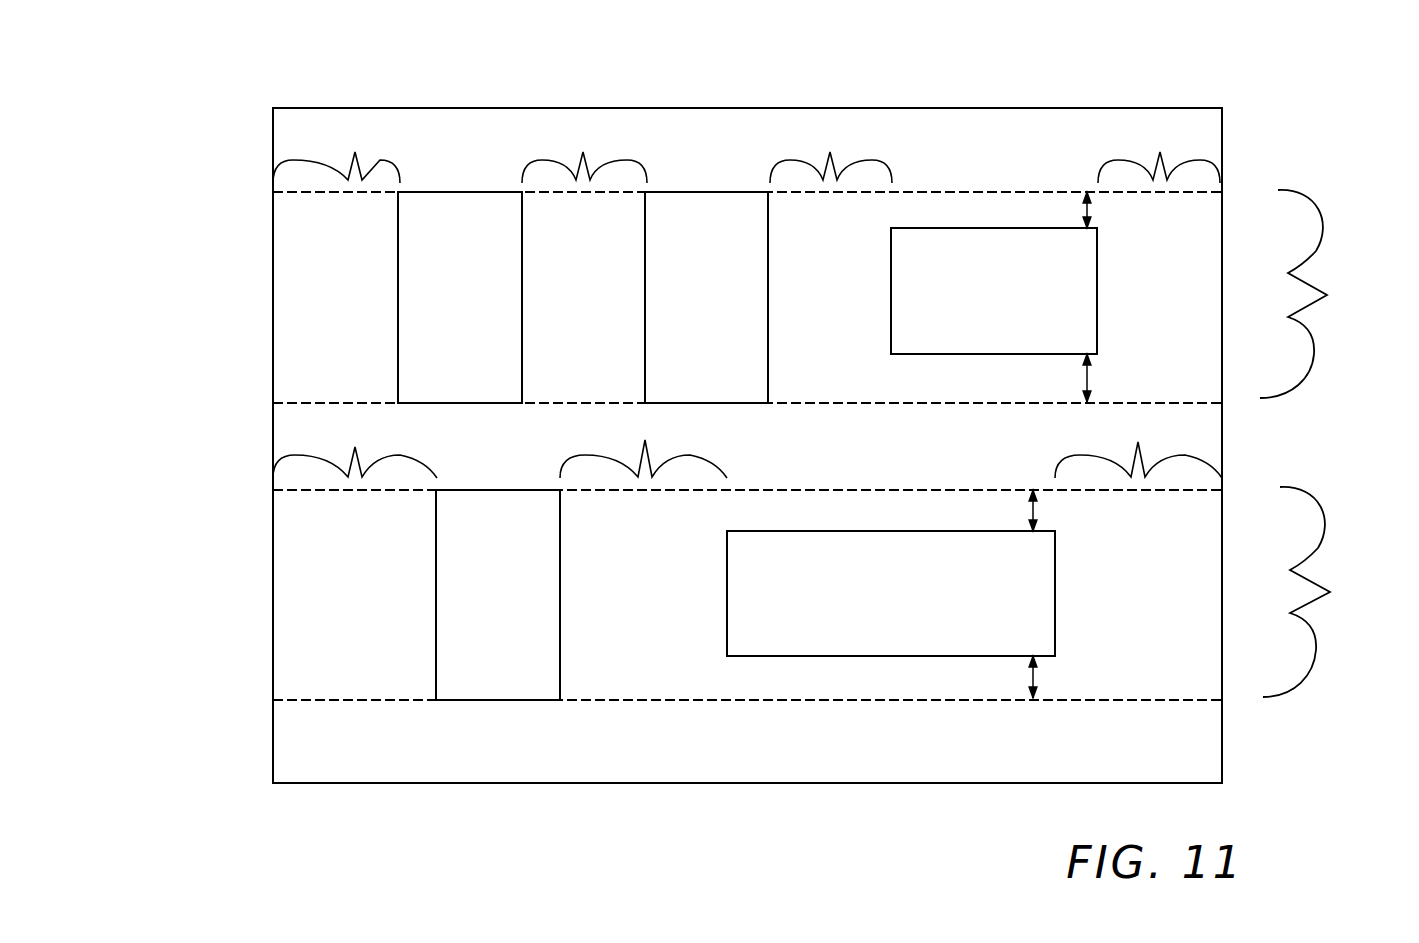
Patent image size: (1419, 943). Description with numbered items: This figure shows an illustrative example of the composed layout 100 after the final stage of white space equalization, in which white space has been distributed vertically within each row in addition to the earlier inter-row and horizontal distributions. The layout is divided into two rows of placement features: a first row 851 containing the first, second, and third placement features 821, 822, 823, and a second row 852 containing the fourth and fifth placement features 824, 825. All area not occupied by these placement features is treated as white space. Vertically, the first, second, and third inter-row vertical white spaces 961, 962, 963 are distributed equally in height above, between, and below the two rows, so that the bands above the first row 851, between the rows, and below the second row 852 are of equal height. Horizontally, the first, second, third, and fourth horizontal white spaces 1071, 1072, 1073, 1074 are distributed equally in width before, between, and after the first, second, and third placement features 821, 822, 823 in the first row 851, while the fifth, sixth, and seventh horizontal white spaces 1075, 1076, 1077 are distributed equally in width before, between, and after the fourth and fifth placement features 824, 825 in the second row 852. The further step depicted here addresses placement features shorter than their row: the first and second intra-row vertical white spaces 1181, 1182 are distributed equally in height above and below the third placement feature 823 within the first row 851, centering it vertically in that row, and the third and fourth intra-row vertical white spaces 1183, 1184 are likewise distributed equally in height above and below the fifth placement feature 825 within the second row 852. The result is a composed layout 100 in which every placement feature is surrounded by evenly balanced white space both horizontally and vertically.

The composed layout 100 is at (248, 556).
The first inter-row vertical white space 961 is at (250, 111).
The second inter-row vertical white space 962 is at (250, 405).
The third inter-row vertical white space 963 is at (250, 701).
The first horizontal white space 1071 is at (336, 153).
The second horizontal white space 1072 is at (584, 153).
The third horizontal white space 1073 is at (831, 153).
The fourth horizontal white space 1074 is at (1159, 152).
The fifth horizontal white space 1075 is at (355, 445).
The sixth horizontal white space 1076 is at (643, 444).
The seventh horizontal white space 1077 is at (1138, 444).
The first placement feature 821 is at (482, 204).
The second placement feature 822 is at (689, 204).
The third placement feature 823 is at (992, 253).
The fourth placement feature 824 is at (468, 598).
The fifth placement feature 825 is at (845, 597).
The first intra-row vertical white space 1181 is at (1093, 208).
The second intra-row vertical white space 1182 is at (1093, 375).
The third intra-row vertical white space 1183 is at (1040, 508).
The fourth intra-row vertical white space 1184 is at (1040, 677).
The first row 851 is at (1339, 294).
The second row 852 is at (1341, 592).